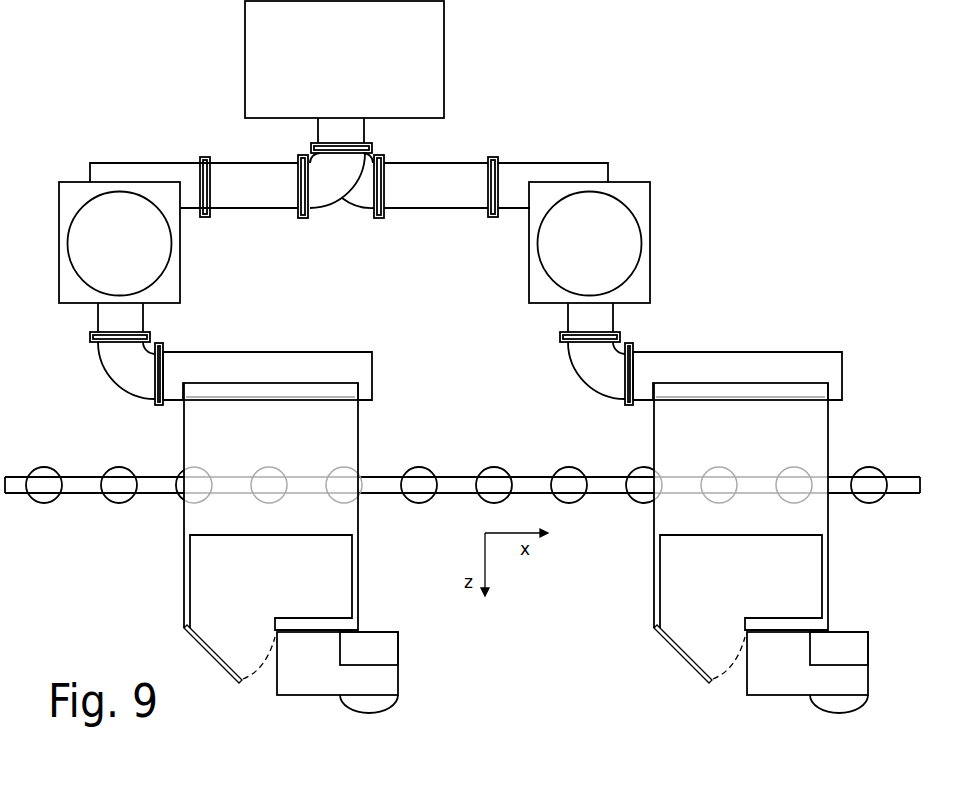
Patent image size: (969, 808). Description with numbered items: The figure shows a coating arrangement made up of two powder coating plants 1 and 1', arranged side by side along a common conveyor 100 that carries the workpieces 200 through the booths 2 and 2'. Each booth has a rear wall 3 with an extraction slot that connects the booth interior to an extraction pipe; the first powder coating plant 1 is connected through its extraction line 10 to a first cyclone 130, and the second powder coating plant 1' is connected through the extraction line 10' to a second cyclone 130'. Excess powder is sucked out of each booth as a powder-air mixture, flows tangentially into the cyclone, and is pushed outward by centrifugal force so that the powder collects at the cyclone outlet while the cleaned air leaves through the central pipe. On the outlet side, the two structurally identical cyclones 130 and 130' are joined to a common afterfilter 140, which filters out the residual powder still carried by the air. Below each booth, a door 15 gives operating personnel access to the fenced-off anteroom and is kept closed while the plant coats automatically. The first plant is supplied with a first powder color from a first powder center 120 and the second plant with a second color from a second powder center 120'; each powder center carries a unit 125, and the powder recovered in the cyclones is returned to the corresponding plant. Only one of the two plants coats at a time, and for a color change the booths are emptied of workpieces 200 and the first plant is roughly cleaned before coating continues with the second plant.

The first powder coating plant 1 is at (241, 506).
The second powder coating plant 1' is at (703, 506).
The booth 2 is at (273, 452).
The booth 2' is at (741, 452).
The rear wall 3 is at (312, 383).
The extraction pipe 10 is at (267, 357).
The extraction line 10' is at (737, 357).
The door 15 is at (207, 653).
The conveyor 100 is at (85, 495).
The workpiece 200 is at (118, 466).
The first powder center 120 is at (366, 677).
The second powder center 120' is at (839, 677).
The control unit 125 is at (380, 632).
The first cyclone 130 is at (153, 242).
The second cyclone 130' is at (626, 242).
The afterfilter 140 is at (447, 60).